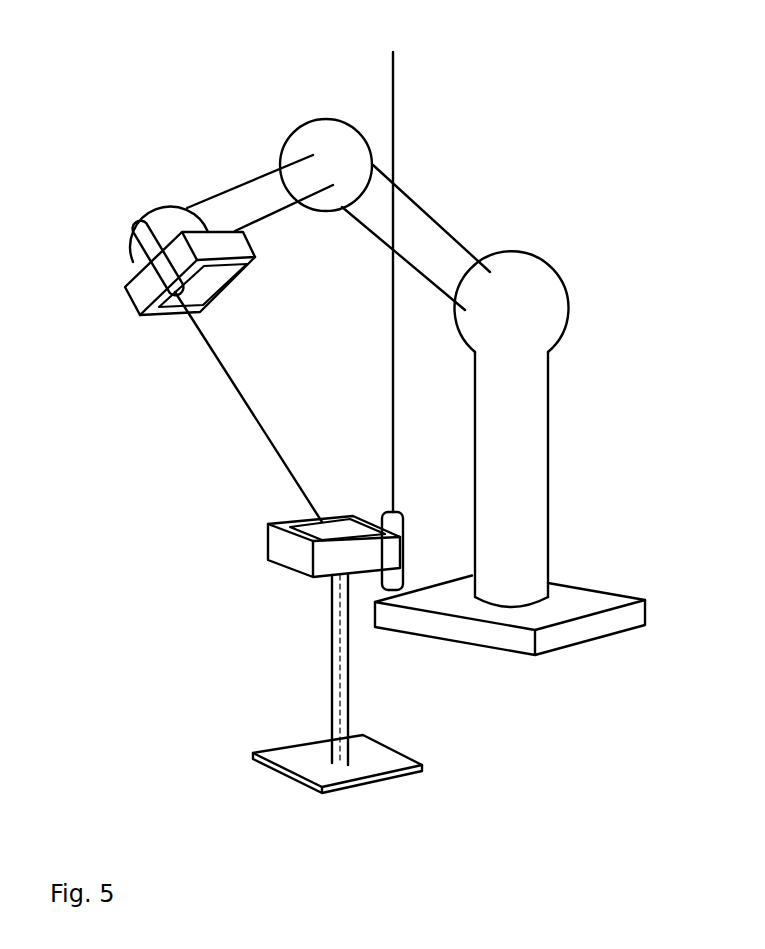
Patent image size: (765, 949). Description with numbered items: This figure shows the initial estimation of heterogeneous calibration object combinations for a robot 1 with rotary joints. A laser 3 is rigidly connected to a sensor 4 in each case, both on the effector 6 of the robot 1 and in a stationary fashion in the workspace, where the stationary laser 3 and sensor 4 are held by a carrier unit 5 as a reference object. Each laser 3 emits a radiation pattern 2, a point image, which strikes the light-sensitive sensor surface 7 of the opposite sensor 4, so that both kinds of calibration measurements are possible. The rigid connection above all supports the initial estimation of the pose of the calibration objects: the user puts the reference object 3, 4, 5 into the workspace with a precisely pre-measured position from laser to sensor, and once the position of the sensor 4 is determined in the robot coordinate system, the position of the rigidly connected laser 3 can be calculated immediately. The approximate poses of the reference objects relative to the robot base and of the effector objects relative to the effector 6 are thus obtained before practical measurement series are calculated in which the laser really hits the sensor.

The robot 1 is at (508, 283).
The radiation pattern 2 is at (392, 345).
The laser 3 is at (137, 228).
The sensor 4 is at (137, 292).
The carrier unit 5 is at (332, 653).
The effector 6 is at (140, 263).
The light-sensitive sensor surface 7 is at (208, 273).